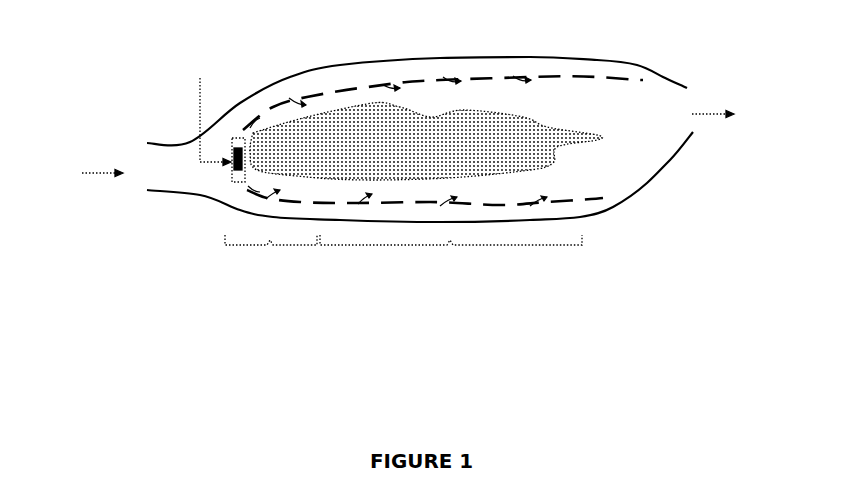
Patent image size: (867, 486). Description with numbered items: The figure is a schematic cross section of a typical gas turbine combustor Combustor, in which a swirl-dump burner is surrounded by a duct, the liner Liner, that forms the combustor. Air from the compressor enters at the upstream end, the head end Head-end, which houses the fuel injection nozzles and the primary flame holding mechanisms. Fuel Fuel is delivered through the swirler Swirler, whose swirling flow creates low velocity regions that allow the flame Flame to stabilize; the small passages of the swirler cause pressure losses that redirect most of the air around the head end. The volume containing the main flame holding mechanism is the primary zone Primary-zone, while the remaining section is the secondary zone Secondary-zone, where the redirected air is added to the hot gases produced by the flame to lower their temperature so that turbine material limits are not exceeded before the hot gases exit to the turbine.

The combustor Combustor is at (520, 40).
The liner Liner is at (353, 87).
The flame Flame is at (426, 141).
The swirler Swirler is at (240, 133).
The fuel Fuel is at (199, 110).
The head end Head-end is at (230, 170).
The primary zone Primary-zone is at (271, 270).
The secondary zone Secondary-zone is at (451, 255).